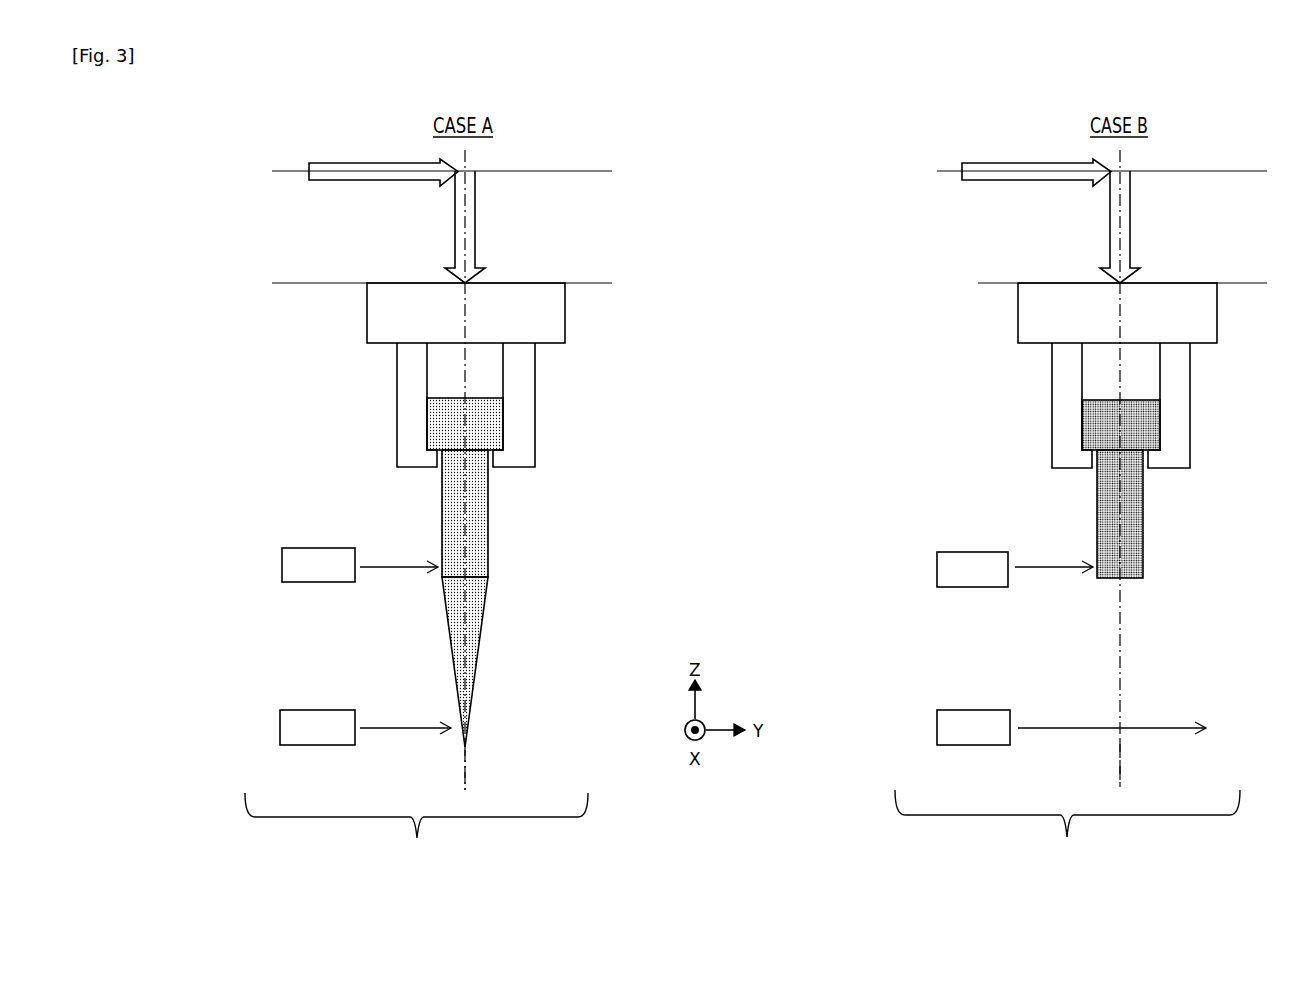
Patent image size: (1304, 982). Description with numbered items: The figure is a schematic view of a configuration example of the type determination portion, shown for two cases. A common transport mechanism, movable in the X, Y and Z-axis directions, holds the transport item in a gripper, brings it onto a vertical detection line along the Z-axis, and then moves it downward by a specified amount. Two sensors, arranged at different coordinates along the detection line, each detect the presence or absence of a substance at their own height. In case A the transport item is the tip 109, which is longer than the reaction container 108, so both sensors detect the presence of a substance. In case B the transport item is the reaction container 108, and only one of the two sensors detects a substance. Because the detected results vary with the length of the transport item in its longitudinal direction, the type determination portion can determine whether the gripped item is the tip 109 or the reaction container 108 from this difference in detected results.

The tip 109 is at (490, 558).
The reaction container 108 is at (1145, 557).